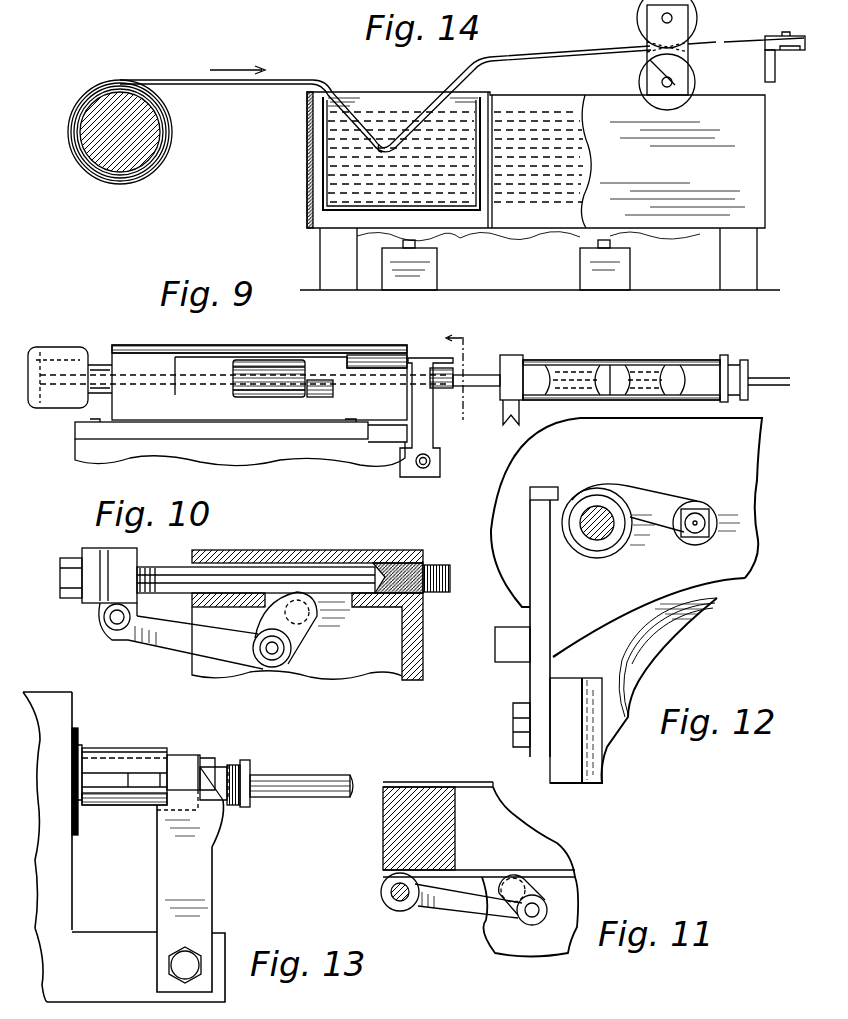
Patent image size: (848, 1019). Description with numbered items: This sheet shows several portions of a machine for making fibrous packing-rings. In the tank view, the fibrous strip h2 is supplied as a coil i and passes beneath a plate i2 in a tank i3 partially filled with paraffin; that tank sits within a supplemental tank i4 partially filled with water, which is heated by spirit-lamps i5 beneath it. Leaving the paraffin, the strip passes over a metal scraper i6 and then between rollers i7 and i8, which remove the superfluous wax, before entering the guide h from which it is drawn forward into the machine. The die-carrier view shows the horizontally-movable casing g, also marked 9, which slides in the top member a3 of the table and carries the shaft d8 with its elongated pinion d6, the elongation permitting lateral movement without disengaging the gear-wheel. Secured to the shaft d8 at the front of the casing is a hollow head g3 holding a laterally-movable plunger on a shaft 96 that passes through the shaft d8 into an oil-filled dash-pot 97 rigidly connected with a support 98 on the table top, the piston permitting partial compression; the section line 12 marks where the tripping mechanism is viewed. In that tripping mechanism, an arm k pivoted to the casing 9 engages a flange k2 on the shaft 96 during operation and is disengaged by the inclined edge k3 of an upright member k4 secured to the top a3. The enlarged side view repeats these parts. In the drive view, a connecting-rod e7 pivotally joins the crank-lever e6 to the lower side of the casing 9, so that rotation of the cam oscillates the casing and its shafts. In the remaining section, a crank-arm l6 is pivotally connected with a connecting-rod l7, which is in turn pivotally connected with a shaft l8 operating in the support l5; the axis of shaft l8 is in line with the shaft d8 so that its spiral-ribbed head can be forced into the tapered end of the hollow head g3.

In FIG. 14, the coil i is at (172, 132).
In FIG. 14, the fibrous strip h2 is at (462, 95).
In FIG. 14, the plate i2 is at (392, 138).
In FIG. 14, the tank i3 is at (323, 152).
In FIG. 14, the supplemental tank i4 is at (307, 195).
In FIG. 14, the spirit-lamps i5 is at (437, 266).
In FIG. 14, the metal scraper i6 is at (487, 80).
In FIG. 14, the roller i7 is at (637, 28).
In FIG. 14, the roller i8 is at (640, 75).
In FIG. 14, the guide h is at (788, 72).
In FIG. 9, the hollow head g3 is at (70, 350).
In FIG. 9, the casing g is at (290, 350).
In FIG. 9, the pinion d6 is at (275, 385).
In FIG. 9, the shaft d8 is at (320, 392).
In FIG. 13, the shaft d8 is at (78, 735).
In FIG. 9, the shaft 96 is at (483, 366).
In FIG. 12, the shaft 96 is at (605, 535).
In FIG. 13, the shaft 96 is at (298, 775).
In FIG. 9, the line 12 12 is at (460, 377).
In FIG. 9, the dash-pot 97 is at (608, 362).
In FIG. 9, the support 98 is at (511, 412).
In FIG. 12, the casing 9 is at (626, 600).
In FIG. 13, the casing 9 is at (47, 811).
In FIG. 11, the casing 9 is at (433, 787).
In FIG. 12, the arm k is at (648, 490).
In FIG. 13, the arm k is at (118, 750).
In FIG. 12, the flange k2 is at (588, 555).
In FIG. 13, the flange k2 is at (185, 753).
In FIG. 13, the inclined edge k3 is at (222, 800).
In FIG. 12, the upright member k4 is at (540, 625).
In FIG. 13, the upright member k4 is at (190, 896).
In FIG. 12, the top member a3 is at (560, 763).
In FIG. 13, the top member a3 is at (130, 965).
In FIG. 11, the top member a3 is at (528, 938).
In FIG. 10, the support l5 is at (283, 548).
In FIG. 10, the shaft l8 is at (257, 580).
In FIG. 10, the connecting-rod l7 is at (168, 644).
In FIG. 10, the crank-arm l6 is at (292, 648).
In FIG. 11, the crank-lever e6 is at (537, 890).
In FIG. 11, the connecting-rod e7 is at (460, 902).